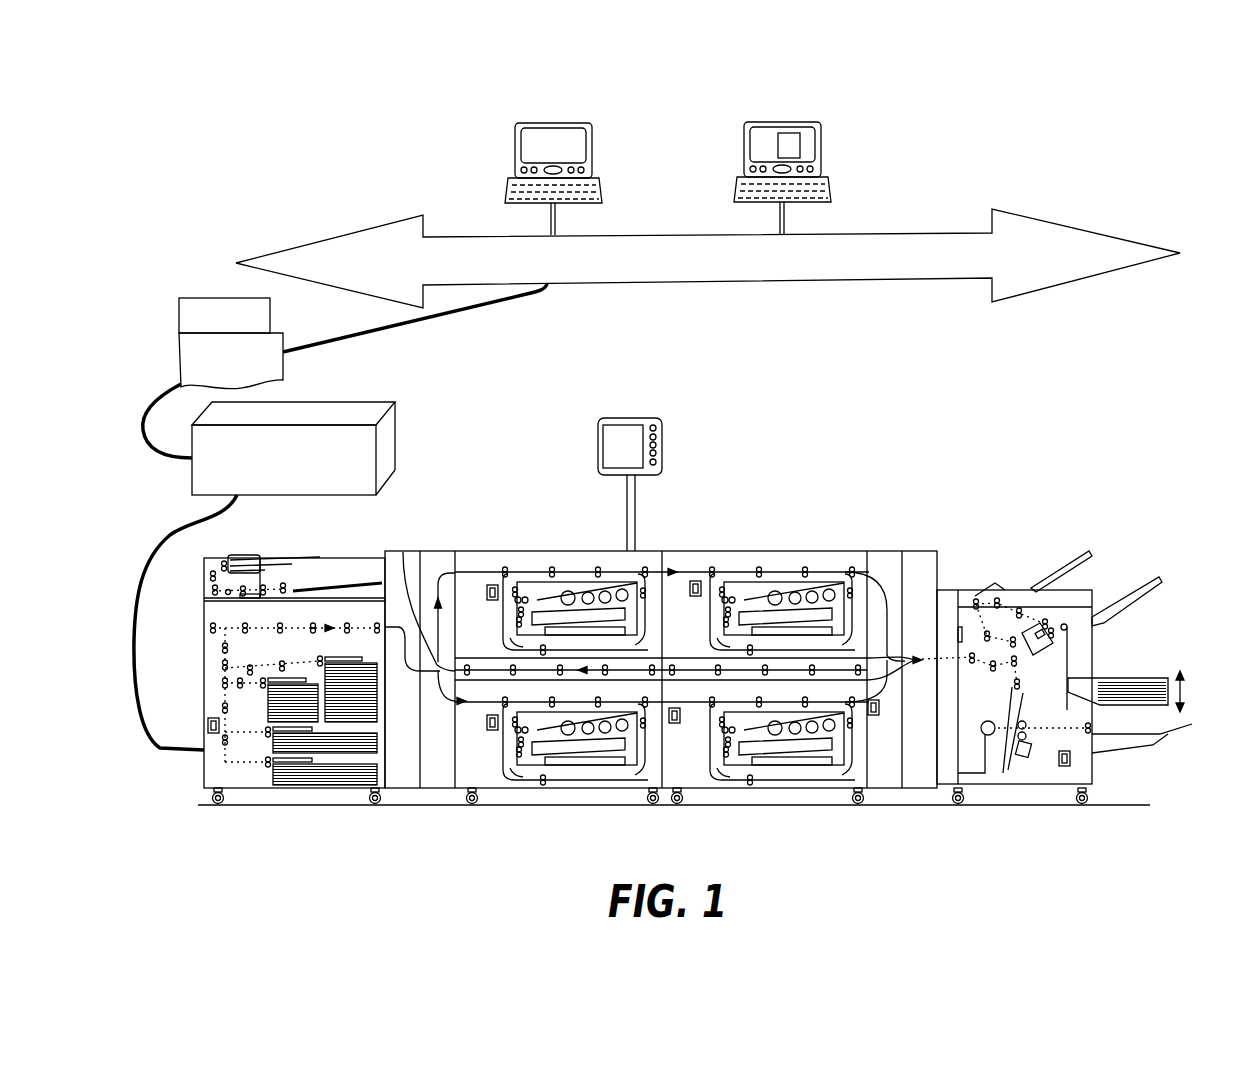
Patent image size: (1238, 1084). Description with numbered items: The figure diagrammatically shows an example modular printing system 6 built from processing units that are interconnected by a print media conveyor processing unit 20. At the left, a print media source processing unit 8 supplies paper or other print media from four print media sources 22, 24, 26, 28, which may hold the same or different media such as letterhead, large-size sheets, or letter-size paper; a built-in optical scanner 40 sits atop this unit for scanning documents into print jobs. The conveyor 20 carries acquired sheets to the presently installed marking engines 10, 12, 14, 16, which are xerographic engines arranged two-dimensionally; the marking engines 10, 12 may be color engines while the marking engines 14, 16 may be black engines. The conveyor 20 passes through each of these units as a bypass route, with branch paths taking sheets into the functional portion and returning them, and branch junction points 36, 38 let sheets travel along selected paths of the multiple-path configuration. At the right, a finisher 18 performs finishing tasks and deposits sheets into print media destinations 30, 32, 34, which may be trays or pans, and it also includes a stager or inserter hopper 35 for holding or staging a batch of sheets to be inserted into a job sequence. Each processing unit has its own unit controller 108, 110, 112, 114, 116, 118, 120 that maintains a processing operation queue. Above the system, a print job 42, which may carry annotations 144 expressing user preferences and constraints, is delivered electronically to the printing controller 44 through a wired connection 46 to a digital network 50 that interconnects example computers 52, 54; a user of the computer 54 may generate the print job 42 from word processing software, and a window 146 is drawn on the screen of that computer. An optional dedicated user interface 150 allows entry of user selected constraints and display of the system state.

The printing system 6 is at (838, 436).
The print media source processing unit 8 is at (184, 772).
The marking engine 10 is at (555, 558).
The marking engine 12 is at (788, 560).
The marking engine 14 is at (498, 780).
The marking engine 16 is at (702, 778).
The finisher 18 is at (976, 541).
The print media conveyor 20 is at (665, 700).
The print media source 22 is at (268, 694).
The print media source 24 is at (303, 777).
The print media source 26 is at (330, 743).
The print media source 28 is at (360, 688).
The print media destination 30 is at (1060, 567).
The print media destination 32 is at (1128, 592).
The print media destination 34 is at (1157, 743).
The stager or inserter hopper 35 is at (1133, 678).
The branch junction point 36 is at (403, 552).
The branch junction point 38 is at (893, 660).
The built-in optical scanner 40 is at (279, 557).
The print job 42 is at (284, 368).
The printing controller 44 is at (387, 443).
The wired connection 46 is at (463, 313).
The digital network 50 is at (807, 272).
The computer 52 is at (513, 153).
The computer 54 is at (743, 153).
The unit controller 108 is at (208, 725).
The unit controller 110 is at (487, 596).
The unit controller 112 is at (700, 581).
The unit controller 114 is at (487, 722).
The unit controller 116 is at (677, 726).
The unit controller 118 is at (1071, 757).
The unit controller 120 is at (876, 718).
The annotations 144 is at (179, 316).
The display window 146 is at (796, 144).
The dedicated user interface 150 is at (634, 421).